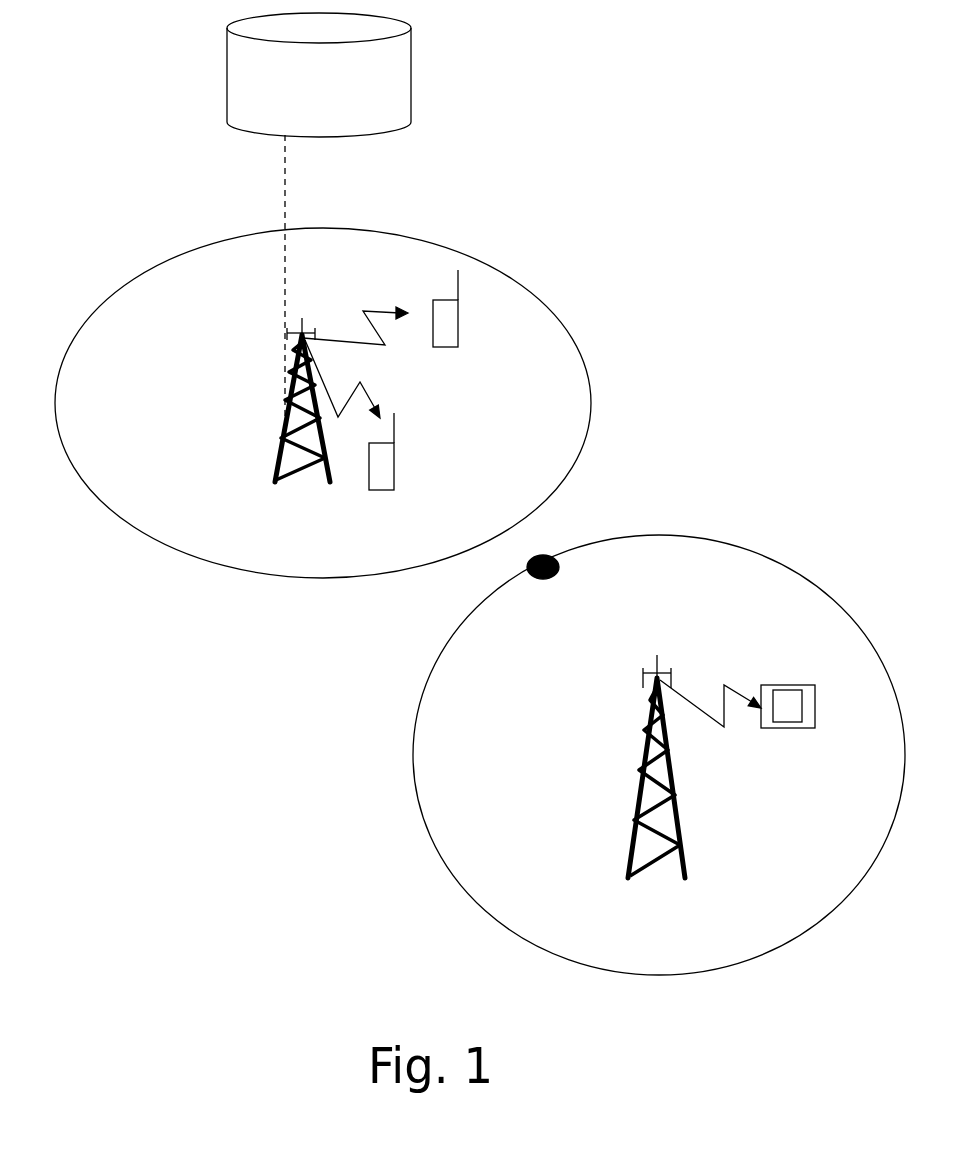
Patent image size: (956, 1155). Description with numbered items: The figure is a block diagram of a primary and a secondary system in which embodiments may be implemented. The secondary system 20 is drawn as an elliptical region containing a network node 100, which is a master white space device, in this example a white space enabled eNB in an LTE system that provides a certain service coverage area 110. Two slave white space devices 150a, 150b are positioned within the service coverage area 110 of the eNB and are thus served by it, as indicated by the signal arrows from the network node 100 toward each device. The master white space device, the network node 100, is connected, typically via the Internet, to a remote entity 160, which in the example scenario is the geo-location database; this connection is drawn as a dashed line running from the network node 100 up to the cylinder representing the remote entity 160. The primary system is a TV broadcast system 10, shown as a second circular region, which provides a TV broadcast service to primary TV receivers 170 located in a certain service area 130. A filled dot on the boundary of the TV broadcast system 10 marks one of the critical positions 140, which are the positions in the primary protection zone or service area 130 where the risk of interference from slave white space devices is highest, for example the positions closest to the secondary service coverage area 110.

The TV broadcast system 10 is at (712, 537).
The secondary system 20 is at (485, 250).
The network node 100 is at (273, 455).
The service coverage area 110 is at (132, 418).
The service area 130 is at (482, 752).
The critical positions 140 is at (550, 556).
The slave white space device 150a is at (383, 490).
The slave white space device 150b is at (437, 347).
The remote entity 160 is at (227, 75).
The primary TV receivers 170 is at (793, 728).